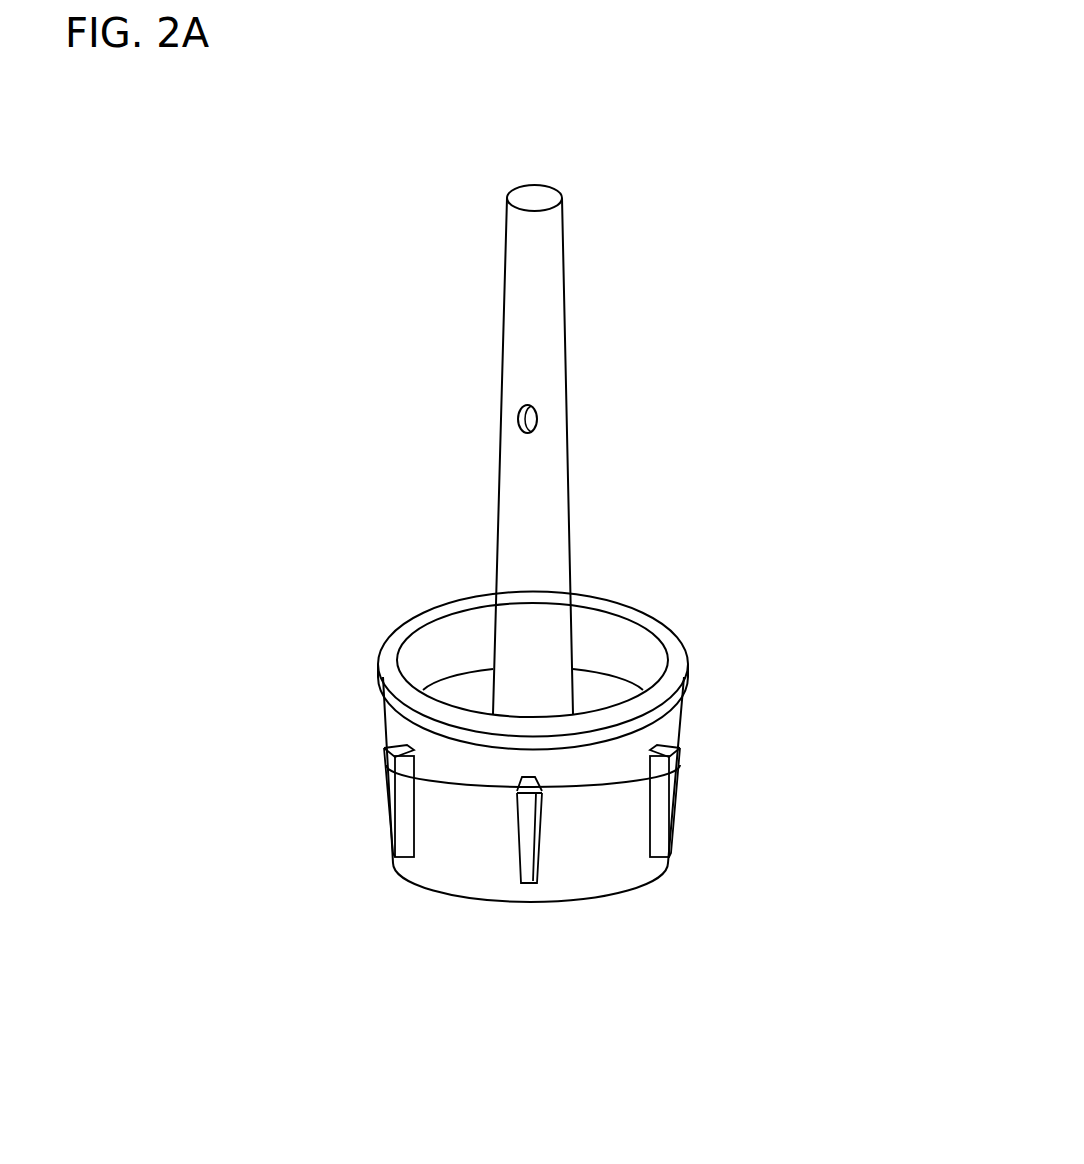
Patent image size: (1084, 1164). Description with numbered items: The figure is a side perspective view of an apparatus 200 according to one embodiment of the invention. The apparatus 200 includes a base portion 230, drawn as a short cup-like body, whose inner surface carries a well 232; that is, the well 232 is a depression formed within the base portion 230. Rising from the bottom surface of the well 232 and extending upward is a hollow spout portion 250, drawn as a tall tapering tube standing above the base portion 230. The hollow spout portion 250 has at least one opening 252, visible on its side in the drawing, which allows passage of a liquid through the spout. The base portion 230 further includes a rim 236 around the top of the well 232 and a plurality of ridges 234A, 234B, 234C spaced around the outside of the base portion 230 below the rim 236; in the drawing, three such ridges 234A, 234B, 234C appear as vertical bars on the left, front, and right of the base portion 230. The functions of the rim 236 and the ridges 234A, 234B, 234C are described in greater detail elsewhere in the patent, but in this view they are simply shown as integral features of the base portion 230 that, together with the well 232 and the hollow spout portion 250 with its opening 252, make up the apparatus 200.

The apparatus 200 is at (584, 519).
The base portion 230 is at (556, 757).
The well 232 is at (462, 663).
The rim 236 is at (405, 693).
The ridge 234A is at (402, 812).
The ridge 234B is at (533, 853).
The ridge 234C is at (667, 822).
The hollow spout portion 250 is at (645, 449).
The opening 252 is at (532, 418).